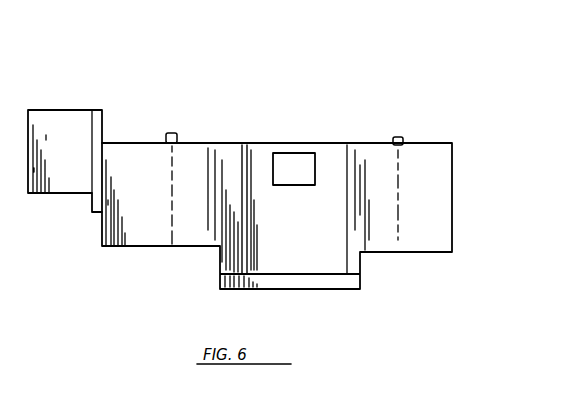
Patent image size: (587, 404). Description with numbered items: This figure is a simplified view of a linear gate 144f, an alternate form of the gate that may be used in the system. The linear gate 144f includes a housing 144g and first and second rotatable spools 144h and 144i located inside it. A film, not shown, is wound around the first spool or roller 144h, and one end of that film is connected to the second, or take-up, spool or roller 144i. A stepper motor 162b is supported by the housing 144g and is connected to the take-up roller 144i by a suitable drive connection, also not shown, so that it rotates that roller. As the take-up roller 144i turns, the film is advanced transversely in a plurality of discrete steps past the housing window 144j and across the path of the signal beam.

The stepper motor 162b is at (32, 176).
The linear gate 144f is at (224, 112).
The housing 144g is at (190, 247).
The first spool 144h is at (398, 137).
The second spool 144i is at (173, 133).
The housing window 144j is at (275, 181).